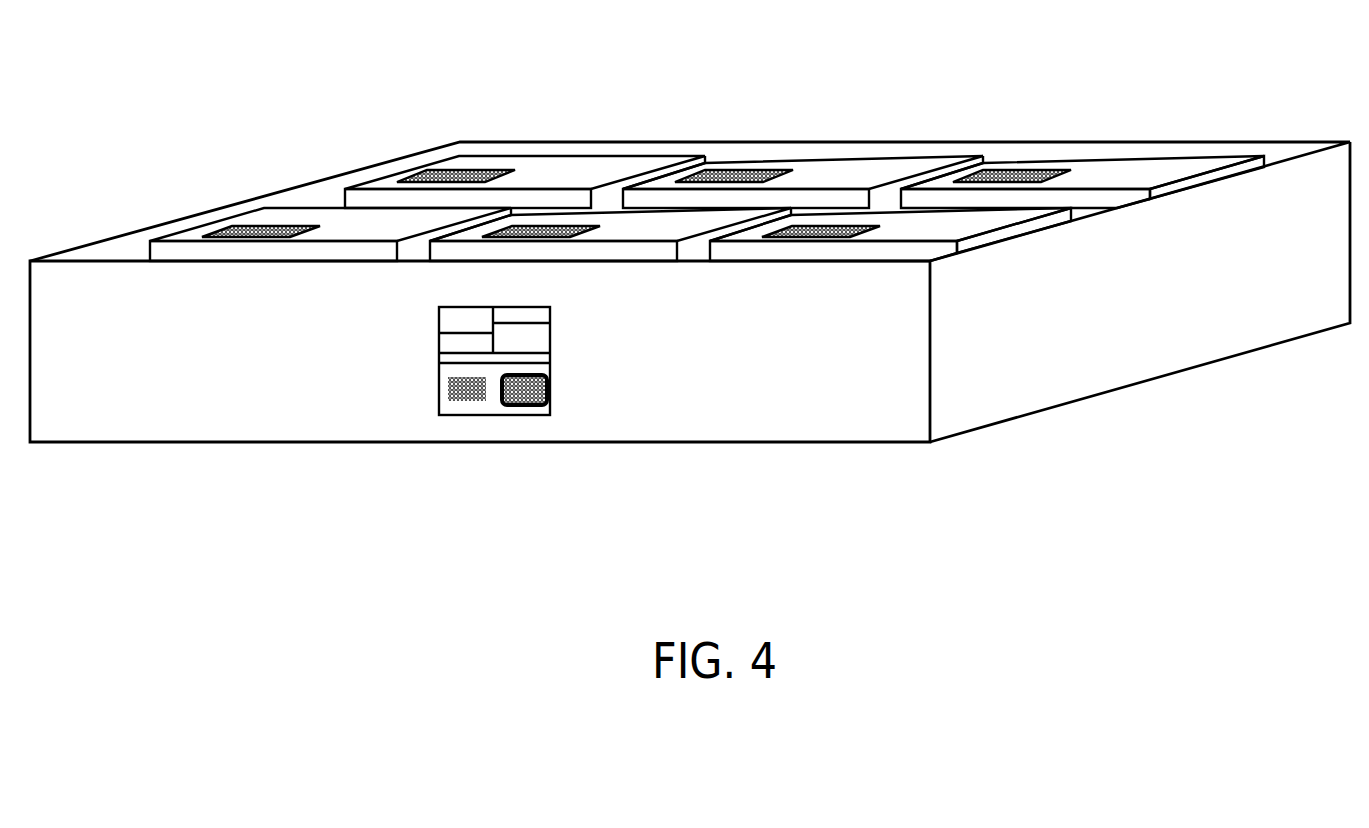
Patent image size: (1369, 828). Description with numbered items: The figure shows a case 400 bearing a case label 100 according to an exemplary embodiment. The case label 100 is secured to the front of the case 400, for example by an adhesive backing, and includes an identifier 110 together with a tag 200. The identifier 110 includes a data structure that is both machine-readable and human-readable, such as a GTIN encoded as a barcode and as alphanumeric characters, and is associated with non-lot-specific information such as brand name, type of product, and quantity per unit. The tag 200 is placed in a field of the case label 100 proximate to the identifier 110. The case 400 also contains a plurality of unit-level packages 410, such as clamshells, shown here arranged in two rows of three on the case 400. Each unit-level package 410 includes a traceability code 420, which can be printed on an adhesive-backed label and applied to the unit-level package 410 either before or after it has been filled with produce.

The case 400 is at (533, 141).
The unit-level package 410 is at (815, 170).
The traceability code 420 is at (248, 228).
The case label 100 is at (439, 333).
The identifier 110 is at (467, 403).
The tag 200 is at (529, 403).